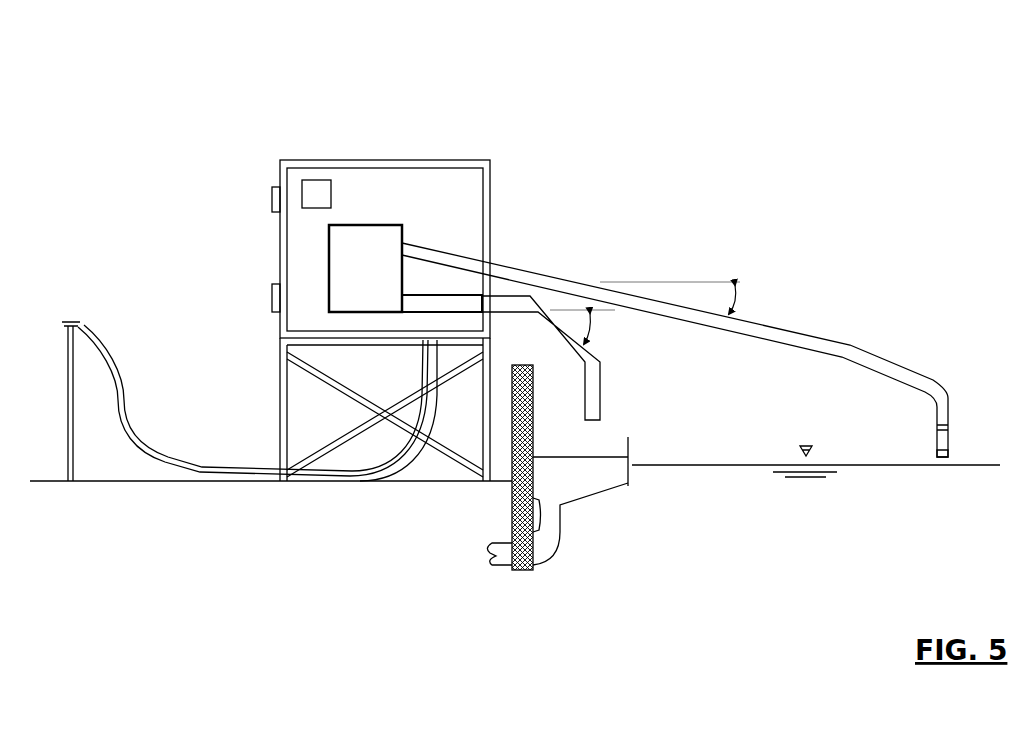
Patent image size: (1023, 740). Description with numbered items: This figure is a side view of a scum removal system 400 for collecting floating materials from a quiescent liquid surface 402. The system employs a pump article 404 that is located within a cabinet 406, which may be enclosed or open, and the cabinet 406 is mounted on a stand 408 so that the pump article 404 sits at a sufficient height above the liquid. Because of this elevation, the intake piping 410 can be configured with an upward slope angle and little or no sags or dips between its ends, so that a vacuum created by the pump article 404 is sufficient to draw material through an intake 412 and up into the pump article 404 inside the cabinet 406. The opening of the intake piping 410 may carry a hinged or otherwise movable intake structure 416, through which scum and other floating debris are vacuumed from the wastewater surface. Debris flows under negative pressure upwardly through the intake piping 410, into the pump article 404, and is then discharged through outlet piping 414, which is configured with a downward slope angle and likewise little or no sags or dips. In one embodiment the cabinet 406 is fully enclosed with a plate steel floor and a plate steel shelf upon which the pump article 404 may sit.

The scum removal system 400 is at (846, 112).
The quiescent liquid surface 402 is at (667, 465).
The pump article 404 is at (405, 268).
The cabinet 406 is at (456, 166).
The stand 408 is at (278, 370).
The intake piping 410 is at (893, 361).
The intake 412 is at (947, 457).
The outlet piping 414 is at (604, 409).
The movable intake structure 416 is at (942, 428).